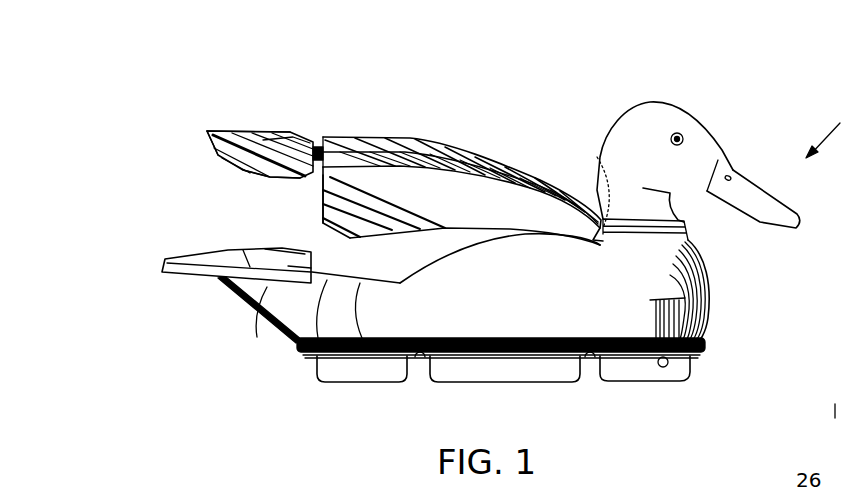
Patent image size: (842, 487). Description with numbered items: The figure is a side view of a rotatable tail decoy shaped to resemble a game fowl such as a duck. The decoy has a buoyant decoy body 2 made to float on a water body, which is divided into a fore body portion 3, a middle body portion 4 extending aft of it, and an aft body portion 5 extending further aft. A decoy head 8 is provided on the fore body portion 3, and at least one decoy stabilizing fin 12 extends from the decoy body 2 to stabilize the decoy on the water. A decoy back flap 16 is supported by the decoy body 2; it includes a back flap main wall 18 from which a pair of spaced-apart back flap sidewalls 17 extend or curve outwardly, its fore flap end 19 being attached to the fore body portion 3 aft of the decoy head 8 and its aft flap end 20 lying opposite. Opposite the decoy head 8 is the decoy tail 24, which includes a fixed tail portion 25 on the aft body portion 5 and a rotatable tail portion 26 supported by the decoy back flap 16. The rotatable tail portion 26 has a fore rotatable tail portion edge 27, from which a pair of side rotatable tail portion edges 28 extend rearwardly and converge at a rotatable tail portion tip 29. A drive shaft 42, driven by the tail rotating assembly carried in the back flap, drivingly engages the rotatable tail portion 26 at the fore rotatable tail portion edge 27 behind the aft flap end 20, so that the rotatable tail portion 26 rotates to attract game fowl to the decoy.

The decoy body 2 is at (722, 282).
The fore body portion 3 is at (710, 310).
The middle body portion 4 is at (550, 368).
The aft body portion 5 is at (242, 287).
The decoy head 8 is at (663, 124).
The decoy stabilizing fin 12 is at (465, 363).
The decoy back flap 16 is at (460, 137).
The back flap sidewalls 17 is at (517, 222).
The back flap main wall 18 is at (416, 142).
The fore flap end 19 is at (597, 157).
The aft flap end 20 is at (313, 187).
The decoy tail 24 is at (182, 116).
The fixed tail portion 25 is at (200, 268).
The rotatable tail portion 26 is at (238, 126).
The fore rotatable tail portion edge 27 is at (317, 147).
The side rotatable tail portion edges 28 is at (265, 141).
The rotatable tail portion tip 29 is at (207, 131).
The drive shaft 42 is at (320, 193).